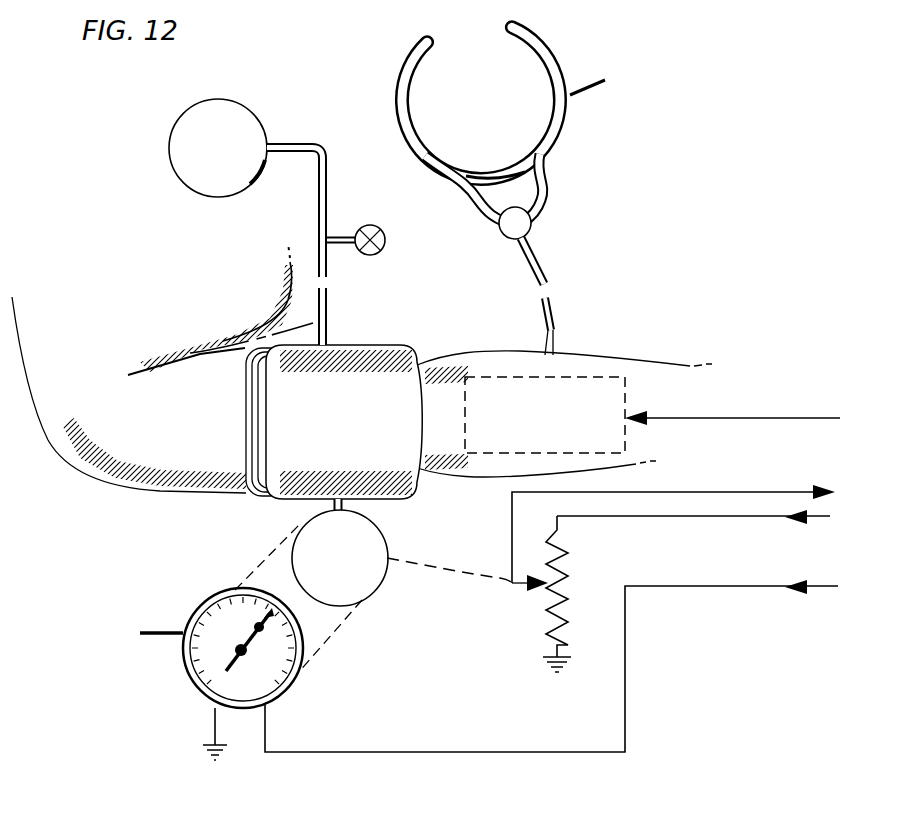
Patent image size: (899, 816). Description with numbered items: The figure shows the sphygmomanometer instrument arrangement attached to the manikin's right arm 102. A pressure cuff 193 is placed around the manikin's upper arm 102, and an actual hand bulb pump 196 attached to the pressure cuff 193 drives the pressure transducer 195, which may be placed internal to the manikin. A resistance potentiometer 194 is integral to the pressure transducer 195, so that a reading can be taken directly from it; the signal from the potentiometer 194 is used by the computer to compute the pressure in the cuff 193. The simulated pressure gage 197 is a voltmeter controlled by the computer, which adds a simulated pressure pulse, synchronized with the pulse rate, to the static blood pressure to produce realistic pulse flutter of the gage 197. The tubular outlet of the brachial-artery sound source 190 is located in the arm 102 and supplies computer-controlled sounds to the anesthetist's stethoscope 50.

The stethoscope 50 is at (560, 132).
The right arm 102 is at (188, 481).
The brachial-artery sound source 190 is at (585, 375).
The pressure cuff 193 is at (372, 342).
The resistance potentiometer 194 is at (540, 604).
The pressure transducer 195 is at (375, 592).
The hand bulb pump 196 is at (257, 118).
The simulated pressure gage 197 is at (297, 693).